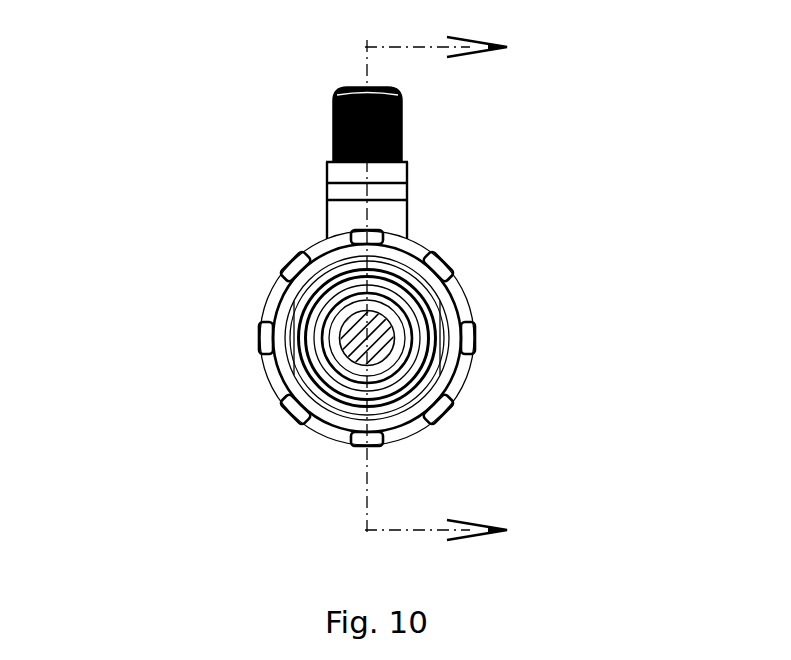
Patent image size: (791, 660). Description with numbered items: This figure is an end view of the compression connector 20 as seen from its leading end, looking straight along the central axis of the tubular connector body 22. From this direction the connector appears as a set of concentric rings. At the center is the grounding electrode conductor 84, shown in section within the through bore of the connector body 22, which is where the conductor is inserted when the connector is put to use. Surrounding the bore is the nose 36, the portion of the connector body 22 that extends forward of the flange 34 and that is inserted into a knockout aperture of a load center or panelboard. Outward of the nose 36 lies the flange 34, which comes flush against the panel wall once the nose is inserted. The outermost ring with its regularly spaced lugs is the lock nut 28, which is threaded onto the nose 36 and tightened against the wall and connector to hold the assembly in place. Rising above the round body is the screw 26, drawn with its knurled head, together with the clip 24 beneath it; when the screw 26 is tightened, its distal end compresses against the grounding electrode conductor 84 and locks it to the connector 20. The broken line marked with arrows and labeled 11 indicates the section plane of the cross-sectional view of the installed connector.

The compression connector 20 is at (184, 231).
The section line 11- 11 is at (436, 290).
The screw 26 is at (333, 130).
The clip 24 is at (407, 200).
The tubular connector body 22 is at (455, 290).
The lock nut 28 is at (473, 333).
The flange 34 is at (468, 380).
The nose 36 is at (345, 383).
The grounding electrode conductor 84 is at (353, 338).